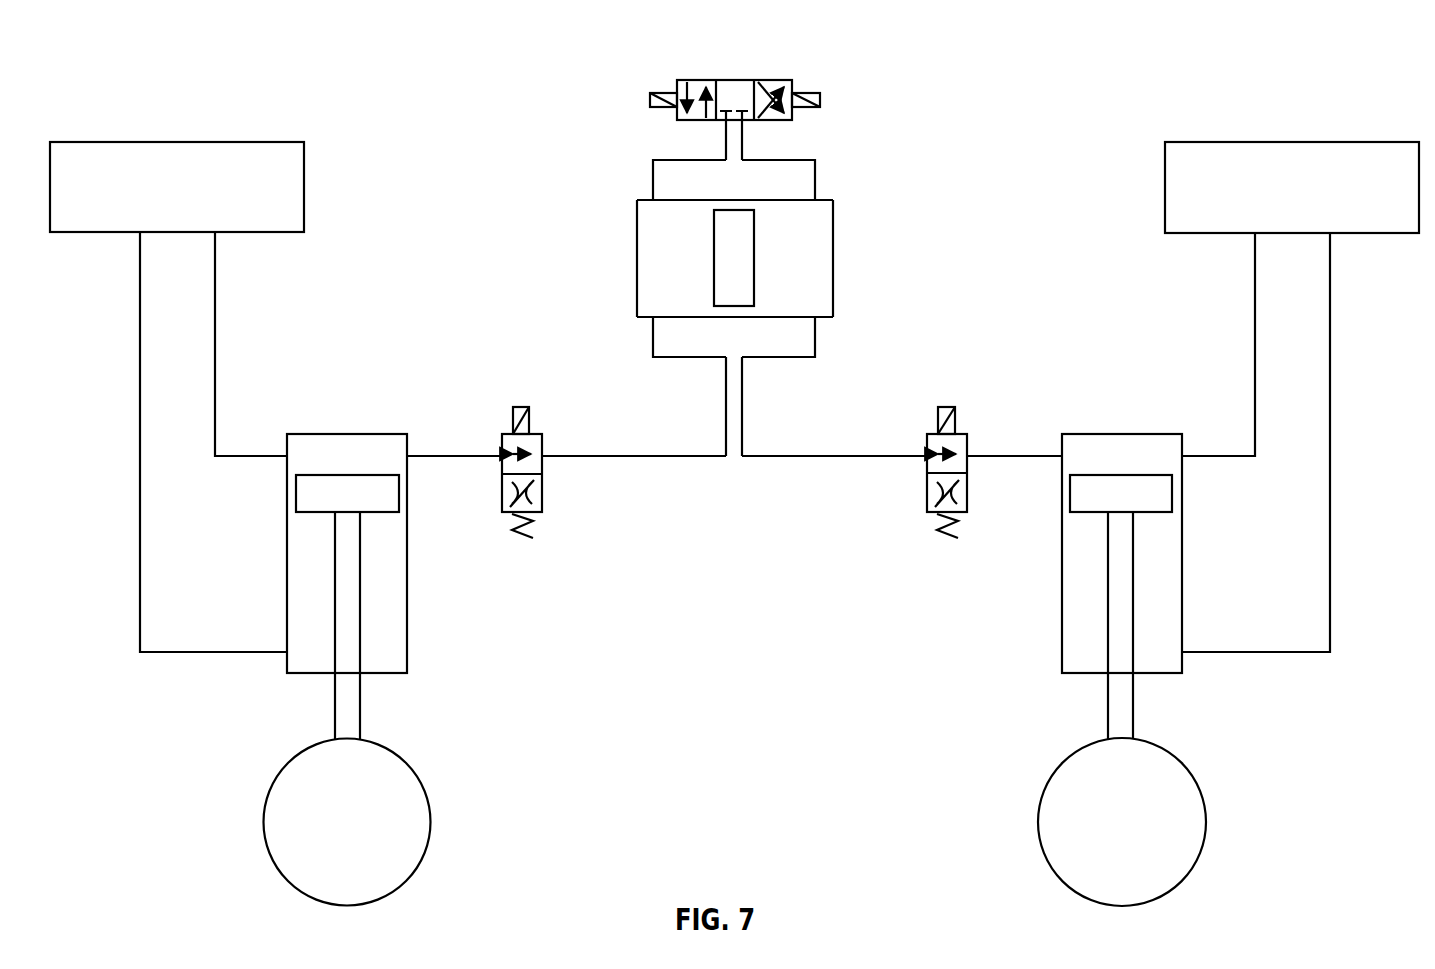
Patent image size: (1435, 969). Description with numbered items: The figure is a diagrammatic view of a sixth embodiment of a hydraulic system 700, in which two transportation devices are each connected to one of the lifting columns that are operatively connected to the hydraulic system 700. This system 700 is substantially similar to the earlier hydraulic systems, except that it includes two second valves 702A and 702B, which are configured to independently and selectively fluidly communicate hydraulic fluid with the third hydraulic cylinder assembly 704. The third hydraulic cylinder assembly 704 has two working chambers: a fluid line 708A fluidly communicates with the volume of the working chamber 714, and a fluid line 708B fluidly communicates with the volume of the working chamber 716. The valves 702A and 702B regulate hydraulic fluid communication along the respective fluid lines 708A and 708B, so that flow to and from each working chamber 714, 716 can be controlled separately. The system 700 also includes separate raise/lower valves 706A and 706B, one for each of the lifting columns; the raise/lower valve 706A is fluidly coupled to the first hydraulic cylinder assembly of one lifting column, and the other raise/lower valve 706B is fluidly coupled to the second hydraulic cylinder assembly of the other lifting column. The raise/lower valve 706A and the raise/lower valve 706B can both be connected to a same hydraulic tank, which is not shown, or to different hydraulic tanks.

The hydraulic system 700 is at (132, 55).
The second valve 702A is at (967, 397).
The second valve 702B is at (502, 397).
The third hydraulic cylinder assembly 704 is at (636, 197).
The raise/lower valve 706A is at (1330, 142).
The raise/lower valve 706B is at (140, 142).
The fluid line 708A is at (847, 457).
The fluid line 708B is at (475, 457).
The working chamber 714 is at (825, 240).
The working chamber 716 is at (643, 240).